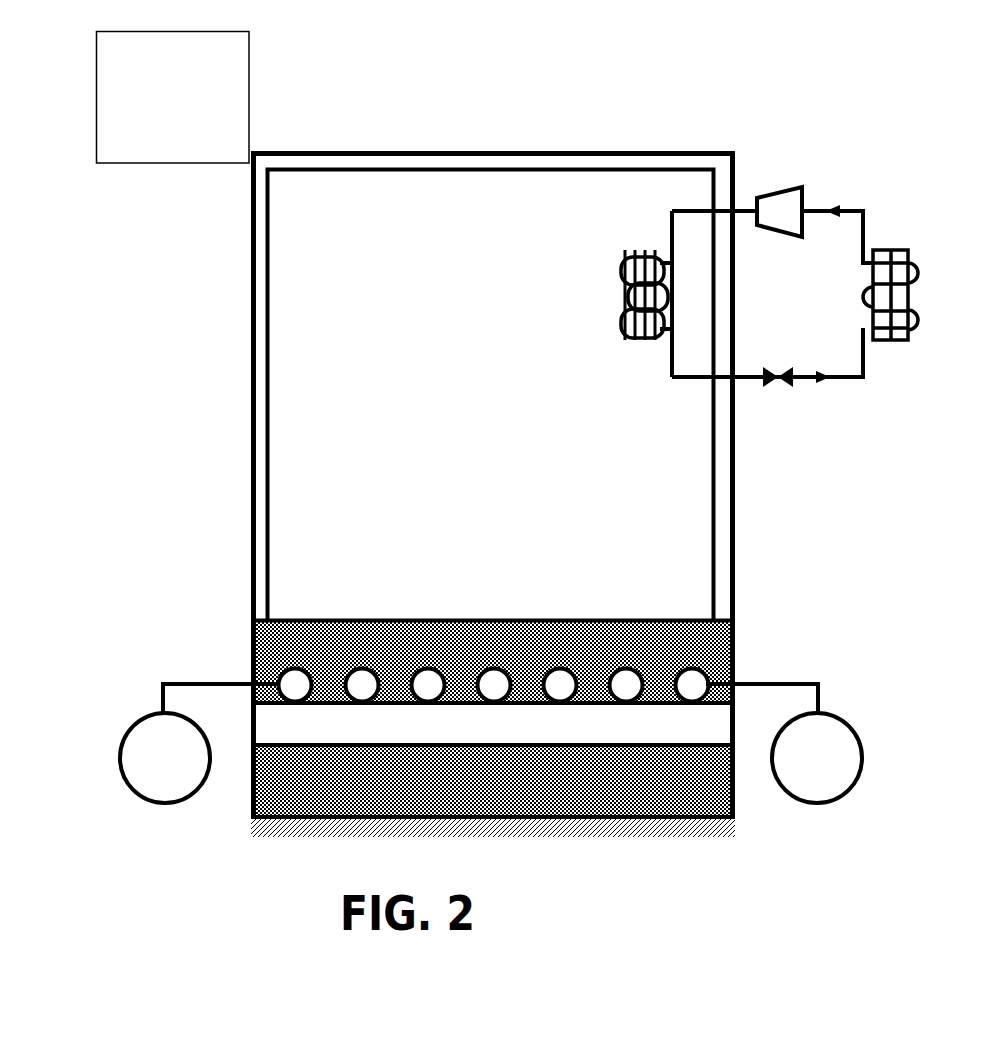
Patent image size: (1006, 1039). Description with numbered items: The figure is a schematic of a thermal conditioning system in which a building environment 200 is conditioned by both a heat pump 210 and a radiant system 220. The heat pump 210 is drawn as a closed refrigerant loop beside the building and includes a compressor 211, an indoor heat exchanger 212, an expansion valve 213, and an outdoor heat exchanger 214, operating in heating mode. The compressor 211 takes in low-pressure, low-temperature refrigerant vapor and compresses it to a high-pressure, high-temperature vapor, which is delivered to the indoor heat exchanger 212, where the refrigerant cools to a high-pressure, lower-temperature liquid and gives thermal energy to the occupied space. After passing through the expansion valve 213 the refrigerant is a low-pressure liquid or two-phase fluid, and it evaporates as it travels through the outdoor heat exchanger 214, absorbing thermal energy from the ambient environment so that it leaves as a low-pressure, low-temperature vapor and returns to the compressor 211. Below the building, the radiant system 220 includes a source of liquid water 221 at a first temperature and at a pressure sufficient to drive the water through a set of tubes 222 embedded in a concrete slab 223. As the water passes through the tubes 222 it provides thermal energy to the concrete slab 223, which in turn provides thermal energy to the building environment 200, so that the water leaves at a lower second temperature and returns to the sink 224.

The building environment 200 is at (493, 486).
The heat pump 210 is at (785, 293).
The compressor 211 is at (774, 194).
The indoor heat exchanger 212 is at (631, 277).
The expansion valve 213 is at (786, 401).
The outdoor heat exchanger 214 is at (919, 295).
The radiant system 220 is at (491, 697).
The source of liquid water 221 is at (200, 743).
The set of tubes 222 is at (352, 676).
The concrete slab 223 is at (493, 729).
The sink 224 is at (784, 743).